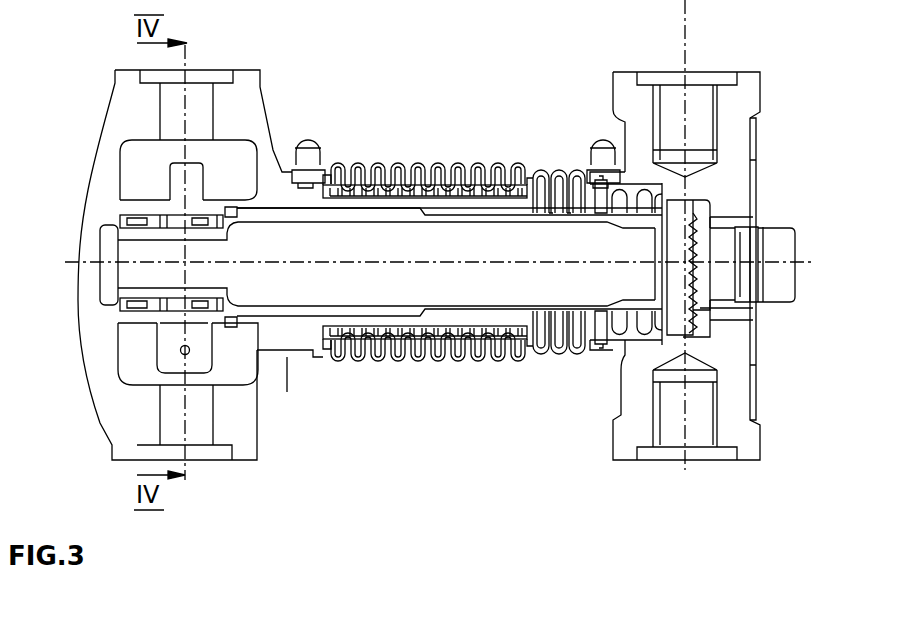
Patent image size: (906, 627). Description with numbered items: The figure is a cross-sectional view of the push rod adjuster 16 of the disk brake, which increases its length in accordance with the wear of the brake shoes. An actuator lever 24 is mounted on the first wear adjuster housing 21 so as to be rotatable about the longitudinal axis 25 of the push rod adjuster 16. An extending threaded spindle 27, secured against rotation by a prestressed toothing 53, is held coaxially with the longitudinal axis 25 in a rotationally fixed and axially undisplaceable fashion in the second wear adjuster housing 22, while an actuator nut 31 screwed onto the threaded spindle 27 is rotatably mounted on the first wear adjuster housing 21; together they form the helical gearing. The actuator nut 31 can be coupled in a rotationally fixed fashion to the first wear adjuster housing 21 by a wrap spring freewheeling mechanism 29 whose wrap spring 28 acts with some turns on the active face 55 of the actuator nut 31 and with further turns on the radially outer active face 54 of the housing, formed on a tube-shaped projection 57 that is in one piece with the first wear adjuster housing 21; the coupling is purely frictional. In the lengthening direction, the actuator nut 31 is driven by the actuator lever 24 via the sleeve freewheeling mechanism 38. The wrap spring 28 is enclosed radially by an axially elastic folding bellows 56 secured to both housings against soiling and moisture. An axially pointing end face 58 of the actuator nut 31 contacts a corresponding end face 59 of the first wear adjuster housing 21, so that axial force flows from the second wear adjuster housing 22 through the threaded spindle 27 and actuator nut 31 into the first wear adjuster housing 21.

The push rod adjuster 16 is at (497, 94).
The first wear adjuster housing 21 is at (257, 412).
The second wear adjuster housing 22 is at (740, 347).
The actuator lever 24 is at (167, 343).
The longitudinal axis 25 is at (802, 262).
The threaded spindle 27 is at (547, 350).
The wrap spring 28 is at (358, 195).
The wrap spring freewheeling mechanism 29 is at (407, 155).
The actuator nut 31 is at (520, 340).
The sleeve freewheeling mechanism 38 is at (160, 223).
The prestressed toothing 53 is at (699, 226).
The radially outer active face 54 is at (405, 195).
The active face 55 is at (488, 195).
The folding bellows 56 is at (530, 175).
The tube-shaped projection 57 is at (363, 320).
The end face 58 is at (422, 316).
The end face 59 is at (435, 206).